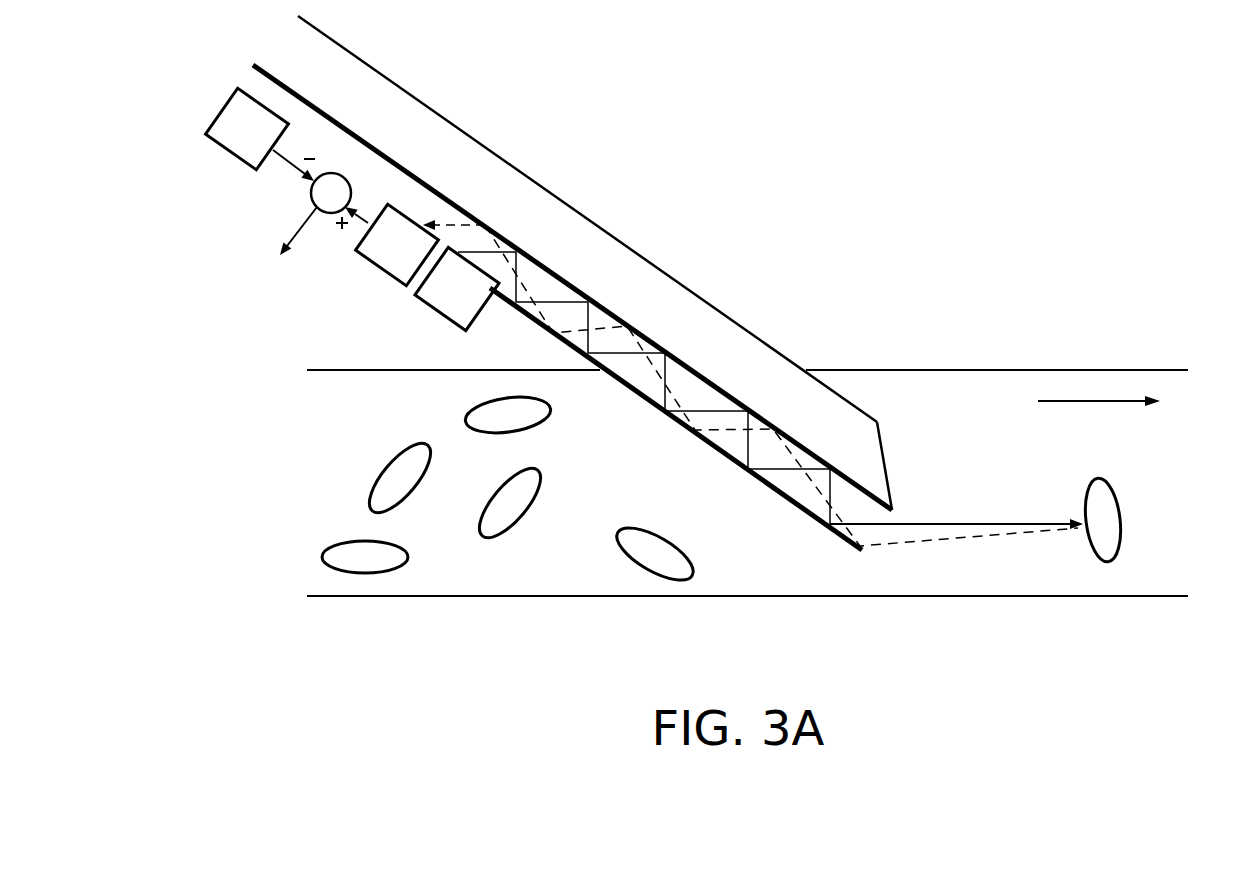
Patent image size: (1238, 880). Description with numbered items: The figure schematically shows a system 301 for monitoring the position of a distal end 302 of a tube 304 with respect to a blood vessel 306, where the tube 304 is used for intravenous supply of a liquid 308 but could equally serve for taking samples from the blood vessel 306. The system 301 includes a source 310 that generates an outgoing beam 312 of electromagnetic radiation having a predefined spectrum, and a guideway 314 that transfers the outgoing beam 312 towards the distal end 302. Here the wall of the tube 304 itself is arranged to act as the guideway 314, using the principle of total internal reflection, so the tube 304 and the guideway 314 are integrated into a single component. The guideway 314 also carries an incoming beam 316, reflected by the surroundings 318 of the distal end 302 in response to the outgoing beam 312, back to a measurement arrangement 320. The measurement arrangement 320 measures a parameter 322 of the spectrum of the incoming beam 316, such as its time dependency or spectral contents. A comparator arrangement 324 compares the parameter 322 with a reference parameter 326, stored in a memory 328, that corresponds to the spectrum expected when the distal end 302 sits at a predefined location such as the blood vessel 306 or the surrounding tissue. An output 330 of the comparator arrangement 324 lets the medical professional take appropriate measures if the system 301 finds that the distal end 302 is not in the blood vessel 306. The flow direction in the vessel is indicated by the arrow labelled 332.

The system 301 is at (188, 122).
The distal end 302 is at (890, 465).
The tube 304 is at (577, 208).
The blood vessel 306 is at (919, 368).
The liquid 308 is at (818, 447).
The source 310 is at (434, 297).
The outgoing beam 312 is at (923, 528).
The guideway 314 is at (683, 428).
The incoming beam 316 is at (998, 537).
The surroundings 318 is at (1003, 496).
The measurement arrangement 320 is at (374, 256).
The parameter 322 is at (363, 213).
The comparator arrangement 324 is at (312, 202).
The reference parameter 326 is at (287, 163).
The memory 328 is at (221, 142).
The output 330 is at (300, 232).
The flow direction 332 is at (1087, 402).